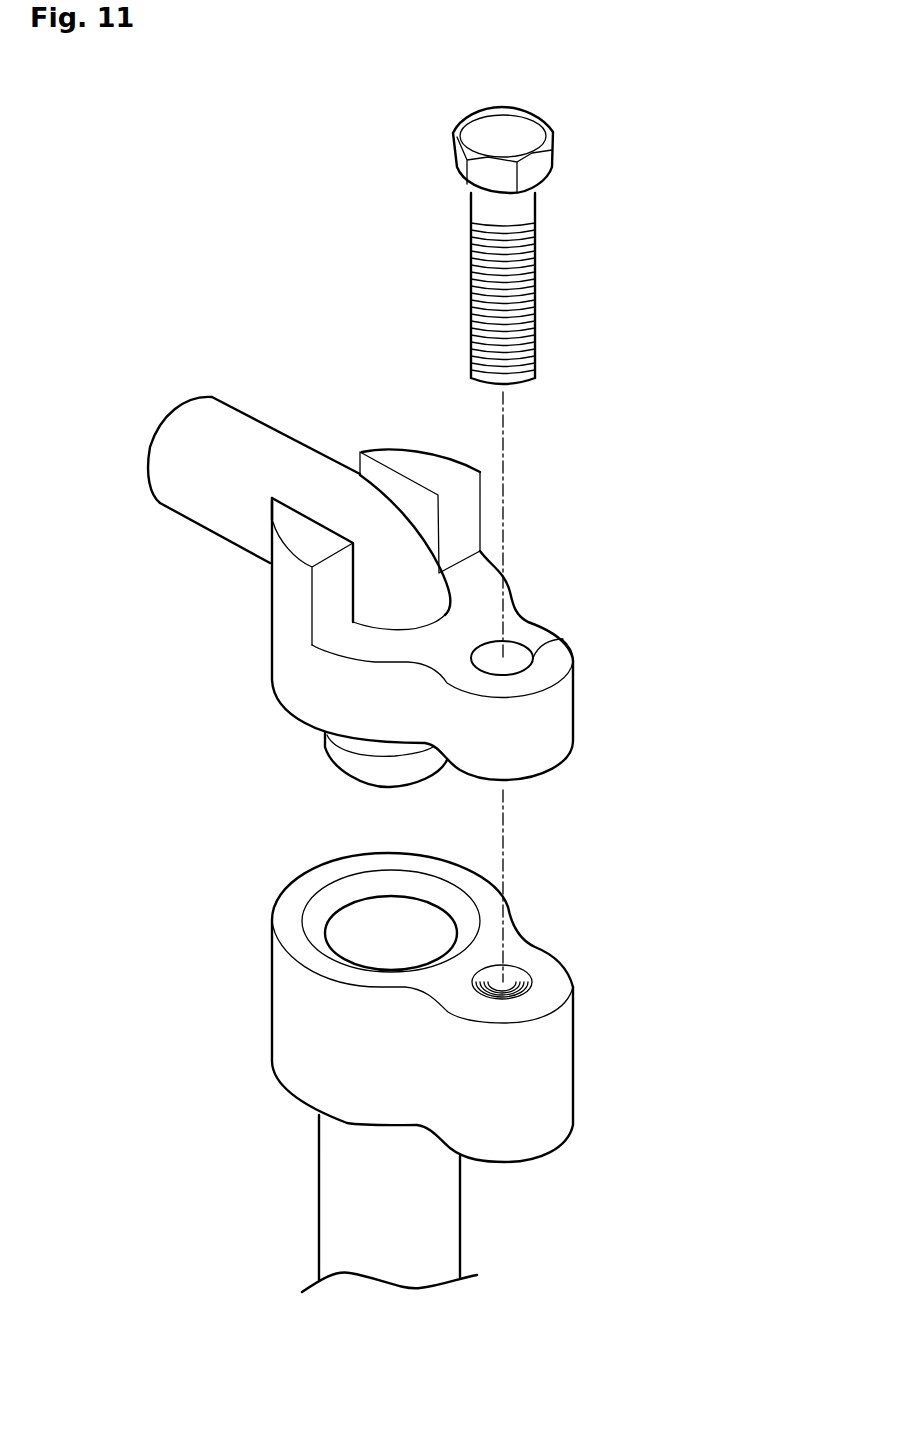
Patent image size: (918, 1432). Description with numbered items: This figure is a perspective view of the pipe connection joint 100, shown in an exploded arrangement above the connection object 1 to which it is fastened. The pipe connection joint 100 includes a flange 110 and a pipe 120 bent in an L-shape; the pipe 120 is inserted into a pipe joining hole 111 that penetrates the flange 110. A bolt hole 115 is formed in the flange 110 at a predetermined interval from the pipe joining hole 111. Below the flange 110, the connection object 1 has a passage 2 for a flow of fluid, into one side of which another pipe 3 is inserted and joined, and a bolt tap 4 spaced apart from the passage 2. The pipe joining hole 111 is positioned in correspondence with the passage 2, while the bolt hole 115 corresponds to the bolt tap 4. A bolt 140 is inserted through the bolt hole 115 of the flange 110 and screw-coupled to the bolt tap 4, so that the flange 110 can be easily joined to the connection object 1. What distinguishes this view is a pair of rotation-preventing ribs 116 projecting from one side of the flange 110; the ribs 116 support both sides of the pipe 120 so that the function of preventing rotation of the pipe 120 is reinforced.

The pipe connection joint 100 is at (200, 630).
The bolt 140 is at (515, 208).
The pipe 120 is at (250, 438).
The flange 110 is at (307, 700).
The rotation-preventing ribs 116 is at (302, 535).
The pipe joining hole 111 is at (450, 617).
The bolt hole 115 is at (563, 640).
The connection object 1 is at (295, 1015).
The passage 2 is at (347, 918).
The another pipe 3 is at (337, 1190).
The bolt tap 4 is at (513, 978).